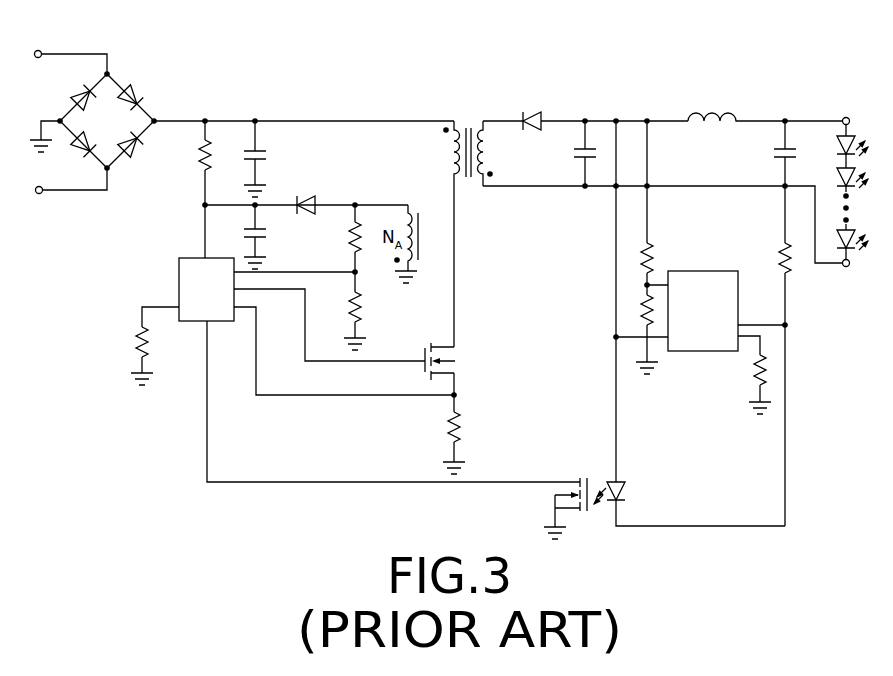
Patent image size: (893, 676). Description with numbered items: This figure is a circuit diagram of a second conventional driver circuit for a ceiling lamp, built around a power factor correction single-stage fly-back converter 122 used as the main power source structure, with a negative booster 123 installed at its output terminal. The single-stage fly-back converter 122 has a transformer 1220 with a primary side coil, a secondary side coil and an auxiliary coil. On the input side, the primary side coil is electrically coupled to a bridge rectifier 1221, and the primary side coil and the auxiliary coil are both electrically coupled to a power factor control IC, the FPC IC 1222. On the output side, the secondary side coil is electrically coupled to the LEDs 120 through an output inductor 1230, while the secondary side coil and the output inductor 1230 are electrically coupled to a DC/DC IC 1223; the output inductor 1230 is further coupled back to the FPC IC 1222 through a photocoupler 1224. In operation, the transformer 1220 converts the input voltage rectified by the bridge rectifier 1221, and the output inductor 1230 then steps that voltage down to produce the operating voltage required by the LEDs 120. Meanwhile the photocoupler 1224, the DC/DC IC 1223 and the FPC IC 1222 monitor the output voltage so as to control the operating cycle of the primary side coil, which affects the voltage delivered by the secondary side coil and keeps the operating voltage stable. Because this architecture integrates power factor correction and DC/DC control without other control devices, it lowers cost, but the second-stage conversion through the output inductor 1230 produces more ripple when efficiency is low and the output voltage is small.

The LEDs 120 is at (851, 130).
The power factor correction single-stage fly-back converter 122 is at (498, 106).
The negative booster 123 is at (578, 107).
The transformer 1220 is at (482, 189).
The bridge rectifier 1221 is at (109, 75).
The power factor control IC (FPC IC) 1222 is at (179, 270).
The DC/DC IC 1223 is at (728, 271).
The photocoupler 1224 is at (623, 493).
The output inductor 1230 is at (688, 108).